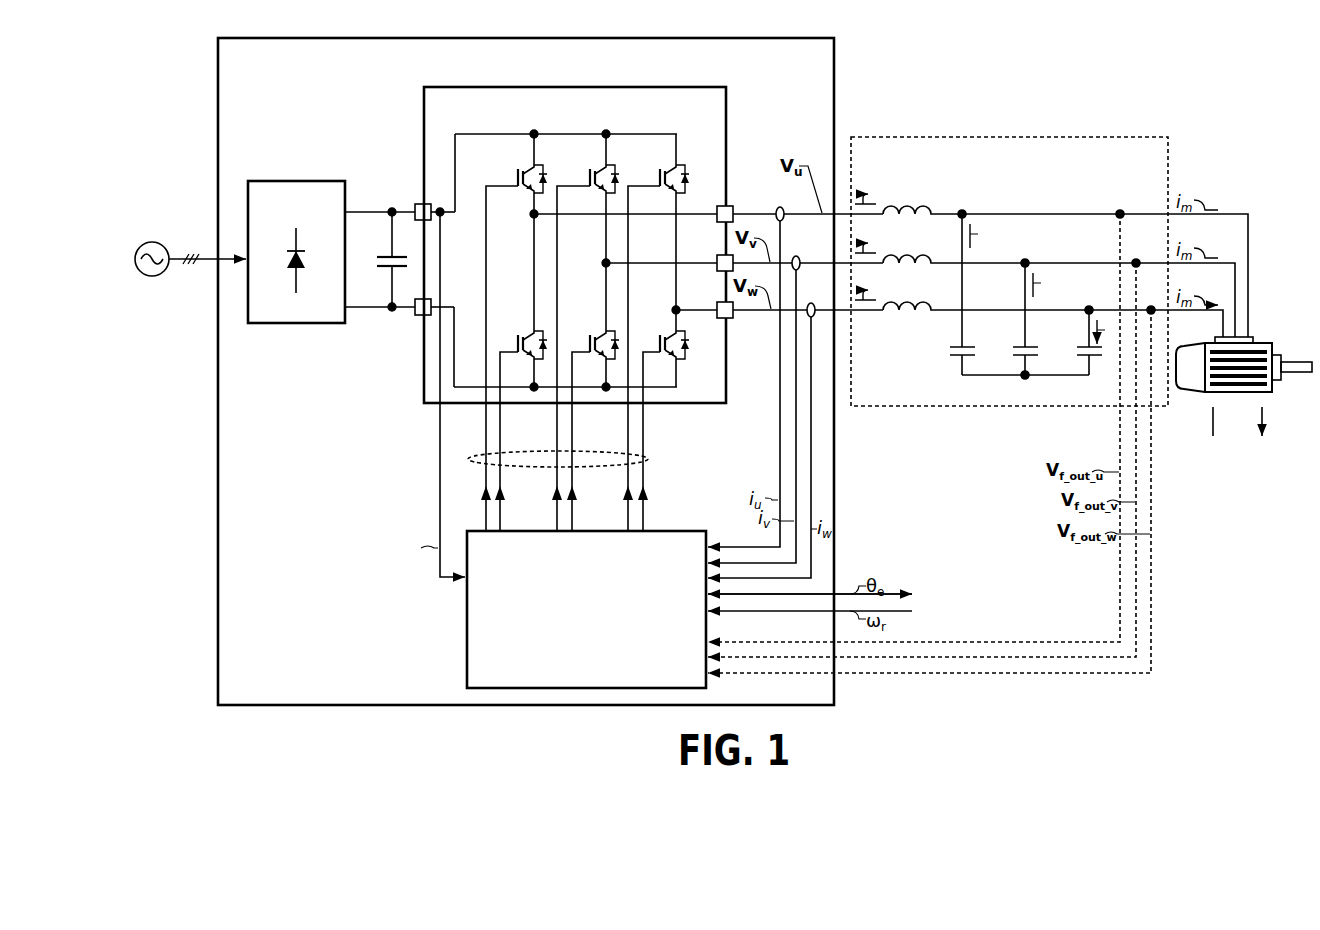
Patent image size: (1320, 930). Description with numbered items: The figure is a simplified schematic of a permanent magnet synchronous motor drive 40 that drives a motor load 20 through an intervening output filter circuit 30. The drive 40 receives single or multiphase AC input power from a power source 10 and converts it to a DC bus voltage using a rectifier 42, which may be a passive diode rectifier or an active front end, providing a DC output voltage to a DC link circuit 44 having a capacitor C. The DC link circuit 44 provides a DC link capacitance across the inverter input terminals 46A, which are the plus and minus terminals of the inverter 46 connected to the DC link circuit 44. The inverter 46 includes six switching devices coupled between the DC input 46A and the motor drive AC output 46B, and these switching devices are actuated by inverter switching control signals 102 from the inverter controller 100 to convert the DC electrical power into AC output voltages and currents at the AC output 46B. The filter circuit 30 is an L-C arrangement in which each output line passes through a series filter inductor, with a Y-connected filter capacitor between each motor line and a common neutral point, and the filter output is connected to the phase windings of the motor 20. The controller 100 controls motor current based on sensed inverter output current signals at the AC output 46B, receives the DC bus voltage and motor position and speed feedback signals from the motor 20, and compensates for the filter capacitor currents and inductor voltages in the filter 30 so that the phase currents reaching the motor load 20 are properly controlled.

The power source 10 is at (157, 245).
The motor load 20 is at (1264, 343).
The output filter circuit 30 is at (996, 137).
The motor drive 40 is at (272, 38).
The rectifier 42 is at (294, 181).
The DC link circuit 44 is at (389, 200).
The inverter 46 is at (579, 87).
The inverter DC input 46A is at (410, 327).
The motor drive AC output 46B is at (740, 203).
The inverter controller 100 is at (675, 531).
The inverter switching control signals 102 is at (642, 458).